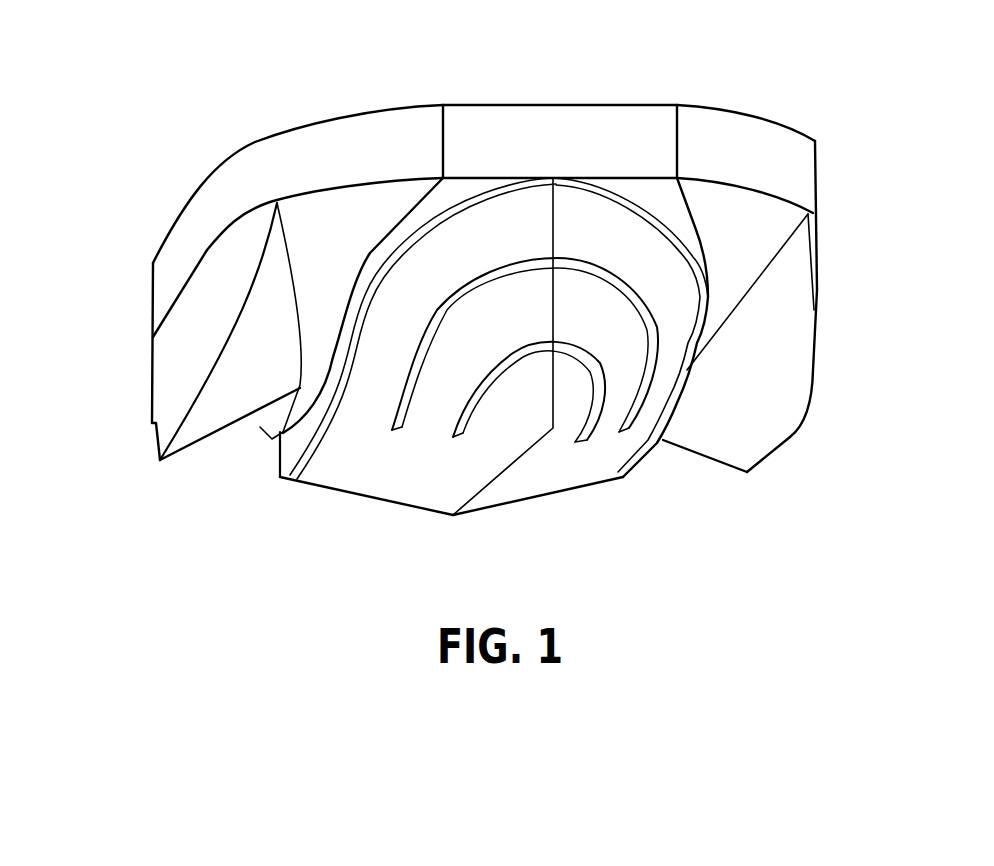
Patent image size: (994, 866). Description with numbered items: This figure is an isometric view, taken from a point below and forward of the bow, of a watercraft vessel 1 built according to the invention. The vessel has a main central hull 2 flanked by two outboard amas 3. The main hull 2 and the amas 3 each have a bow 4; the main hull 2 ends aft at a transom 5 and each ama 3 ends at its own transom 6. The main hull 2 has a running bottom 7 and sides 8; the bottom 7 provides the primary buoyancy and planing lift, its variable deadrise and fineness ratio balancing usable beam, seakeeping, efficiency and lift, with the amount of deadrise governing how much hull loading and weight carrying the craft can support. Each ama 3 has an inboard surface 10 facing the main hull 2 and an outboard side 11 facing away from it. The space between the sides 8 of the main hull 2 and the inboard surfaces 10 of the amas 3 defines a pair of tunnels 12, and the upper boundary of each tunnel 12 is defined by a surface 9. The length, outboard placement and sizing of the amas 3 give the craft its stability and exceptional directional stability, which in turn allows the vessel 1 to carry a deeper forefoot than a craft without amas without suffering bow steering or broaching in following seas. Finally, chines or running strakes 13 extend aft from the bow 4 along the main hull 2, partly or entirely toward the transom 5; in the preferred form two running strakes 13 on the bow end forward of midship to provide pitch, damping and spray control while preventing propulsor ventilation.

The watercraft vessel 1 is at (580, 104).
The main central hull 2 is at (484, 236).
The outboard amas 3 is at (235, 271).
The bow 4 is at (561, 221).
The transom 5 is at (572, 494).
The transom 6 is at (719, 469).
The bottom 7 is at (507, 511).
The sides 8 is at (276, 458).
The surface 9 is at (299, 390).
The inboard surface 10 is at (243, 369).
The outboard side 11 is at (151, 339).
The tunnel 12 is at (341, 238).
The running strakes 13 is at (450, 440).